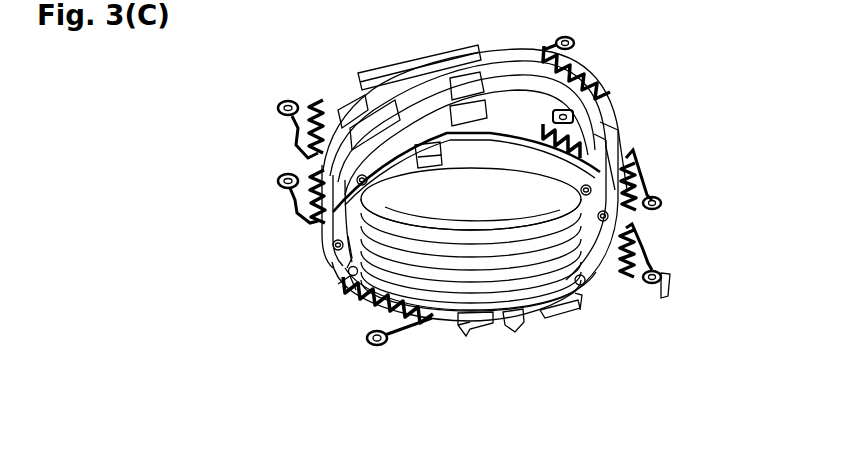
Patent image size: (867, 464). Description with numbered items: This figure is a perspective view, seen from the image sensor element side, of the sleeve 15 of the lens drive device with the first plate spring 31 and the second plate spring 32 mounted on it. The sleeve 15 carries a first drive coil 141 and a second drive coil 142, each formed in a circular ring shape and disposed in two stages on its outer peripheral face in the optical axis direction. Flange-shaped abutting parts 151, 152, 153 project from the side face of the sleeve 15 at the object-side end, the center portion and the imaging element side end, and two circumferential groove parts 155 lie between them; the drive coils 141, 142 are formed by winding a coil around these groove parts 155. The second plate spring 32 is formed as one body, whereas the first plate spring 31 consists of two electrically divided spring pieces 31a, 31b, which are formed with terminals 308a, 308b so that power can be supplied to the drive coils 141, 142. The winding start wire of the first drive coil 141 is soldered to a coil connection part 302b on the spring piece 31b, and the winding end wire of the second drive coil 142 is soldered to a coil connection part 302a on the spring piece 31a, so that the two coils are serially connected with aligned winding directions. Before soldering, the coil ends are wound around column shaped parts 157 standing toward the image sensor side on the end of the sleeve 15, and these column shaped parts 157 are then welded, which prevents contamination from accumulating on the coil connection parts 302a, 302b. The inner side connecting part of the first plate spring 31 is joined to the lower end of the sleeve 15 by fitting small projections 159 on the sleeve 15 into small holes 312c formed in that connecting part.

The sleeve 15 is at (437, 312).
The first plate spring 31 is at (437, 312).
The spring piece 31a is at (578, 304).
The spring piece 31b is at (332, 228).
The second plate spring 32 is at (620, 96).
The first drive coil 141 is at (332, 137).
The second drive coil 142 is at (355, 155).
The abutting part 151 is at (397, 67).
The abutting part 152 is at (457, 87).
The abutting part 153 is at (462, 110).
The groove part 155 is at (585, 49).
The column shaped part 157 is at (420, 163).
The small projection 159 is at (349, 268).
The coil connection part 302a is at (535, 312).
The coil connection part 302b is at (357, 123).
The terminal 308a is at (686, 282).
The terminal 308b is at (583, 115).
The small hole 312c is at (340, 268).